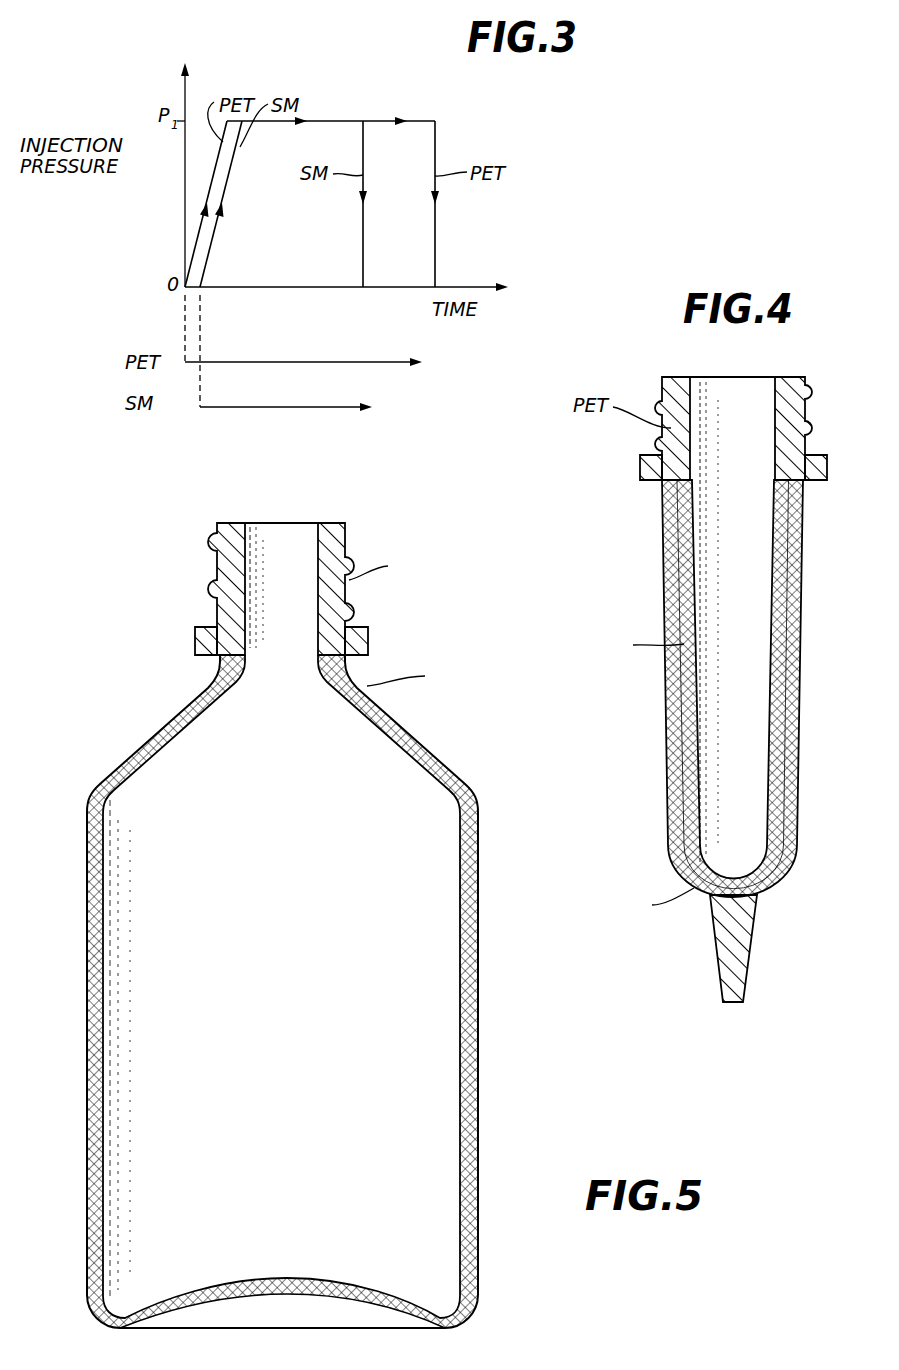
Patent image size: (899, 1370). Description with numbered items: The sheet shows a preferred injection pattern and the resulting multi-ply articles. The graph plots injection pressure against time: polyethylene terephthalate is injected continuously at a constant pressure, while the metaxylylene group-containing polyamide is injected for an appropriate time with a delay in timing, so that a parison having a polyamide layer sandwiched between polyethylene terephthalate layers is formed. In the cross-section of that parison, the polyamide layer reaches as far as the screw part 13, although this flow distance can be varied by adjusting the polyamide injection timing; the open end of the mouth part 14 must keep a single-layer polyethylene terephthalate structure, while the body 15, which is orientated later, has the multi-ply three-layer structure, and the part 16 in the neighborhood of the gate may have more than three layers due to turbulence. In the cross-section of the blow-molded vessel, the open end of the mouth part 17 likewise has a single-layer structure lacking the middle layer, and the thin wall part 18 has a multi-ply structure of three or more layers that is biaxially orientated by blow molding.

In FIG. 4, the screw part 13 is at (810, 413).
In FIG. 4, the mouth part 14 is at (789, 377).
In FIG. 4, the body 15 is at (795, 735).
In FIG. 4, the part in the neighborhood of the gate 16 is at (782, 870).
In FIG. 5, the mouth part 17 is at (332, 523).
In FIG. 5, the thin wall part 18 is at (480, 1025).